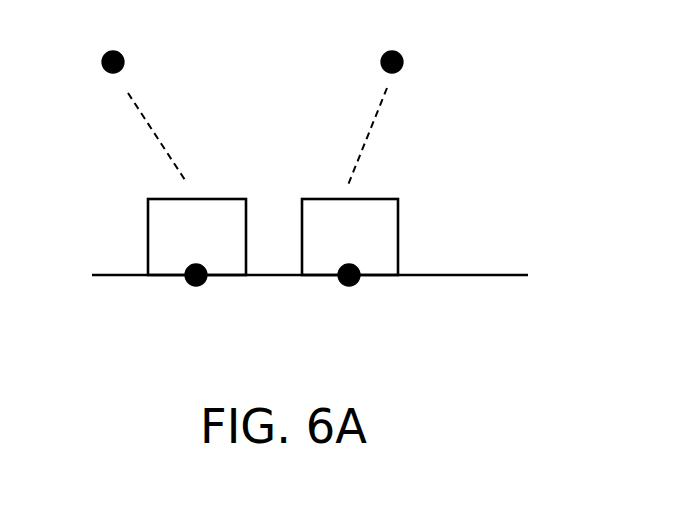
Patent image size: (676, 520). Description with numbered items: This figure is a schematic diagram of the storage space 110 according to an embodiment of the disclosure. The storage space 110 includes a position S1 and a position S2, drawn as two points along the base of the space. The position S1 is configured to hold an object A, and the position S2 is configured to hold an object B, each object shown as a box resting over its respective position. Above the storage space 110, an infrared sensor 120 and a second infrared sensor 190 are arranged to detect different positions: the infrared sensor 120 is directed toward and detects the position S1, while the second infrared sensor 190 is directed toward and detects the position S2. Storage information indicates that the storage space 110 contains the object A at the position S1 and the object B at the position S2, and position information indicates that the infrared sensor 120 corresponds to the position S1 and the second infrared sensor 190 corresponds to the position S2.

The storage space 110 is at (480, 274).
The infrared sensor 120 is at (124, 98).
The second infrared sensor 190 is at (393, 101).
The object A is at (197, 237).
The object B is at (350, 237).
The position S1 is at (195, 287).
The position S2 is at (348, 287).